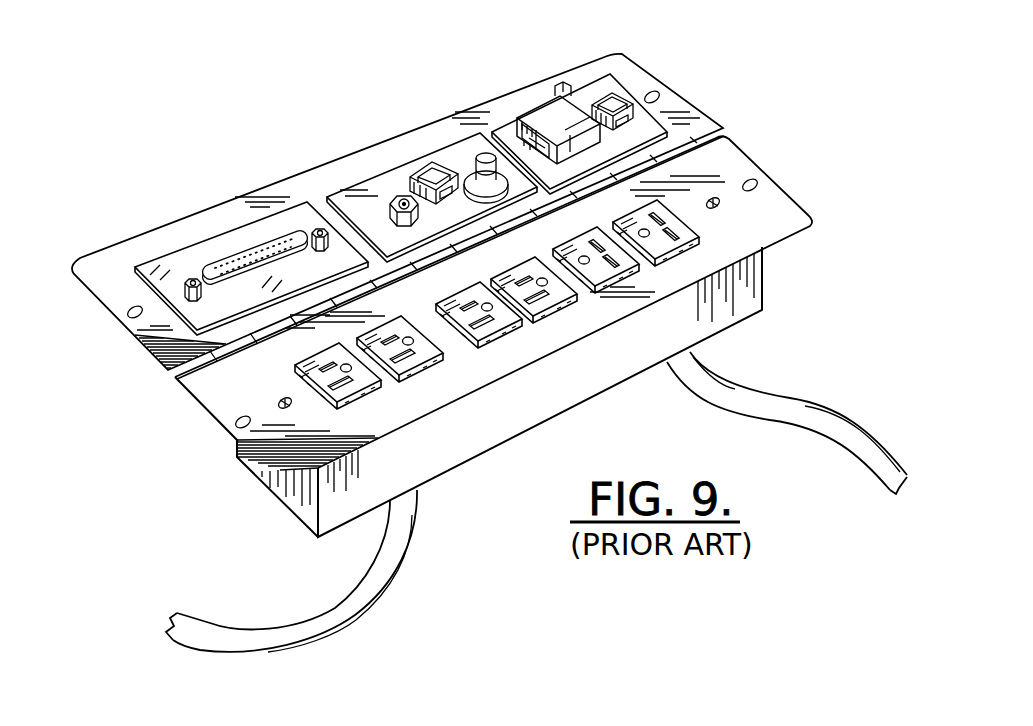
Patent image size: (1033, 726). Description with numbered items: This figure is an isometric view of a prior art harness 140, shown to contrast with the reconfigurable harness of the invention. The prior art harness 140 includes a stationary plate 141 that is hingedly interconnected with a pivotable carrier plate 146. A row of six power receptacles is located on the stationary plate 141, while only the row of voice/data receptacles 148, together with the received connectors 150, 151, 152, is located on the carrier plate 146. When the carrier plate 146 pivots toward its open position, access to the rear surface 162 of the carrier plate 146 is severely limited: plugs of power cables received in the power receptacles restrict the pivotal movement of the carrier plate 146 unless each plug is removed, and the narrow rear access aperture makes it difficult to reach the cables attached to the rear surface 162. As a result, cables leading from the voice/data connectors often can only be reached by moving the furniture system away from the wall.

The prior art harness 140 is at (733, 118).
The stationary plate 141 is at (263, 457).
The carrier plate 146 is at (122, 312).
The voice/data receptacles 148 is at (255, 222).
The received connector 150 is at (173, 258).
The received connector 151 is at (343, 192).
The received connector 152 is at (507, 130).
The rear surface 162 is at (140, 357).